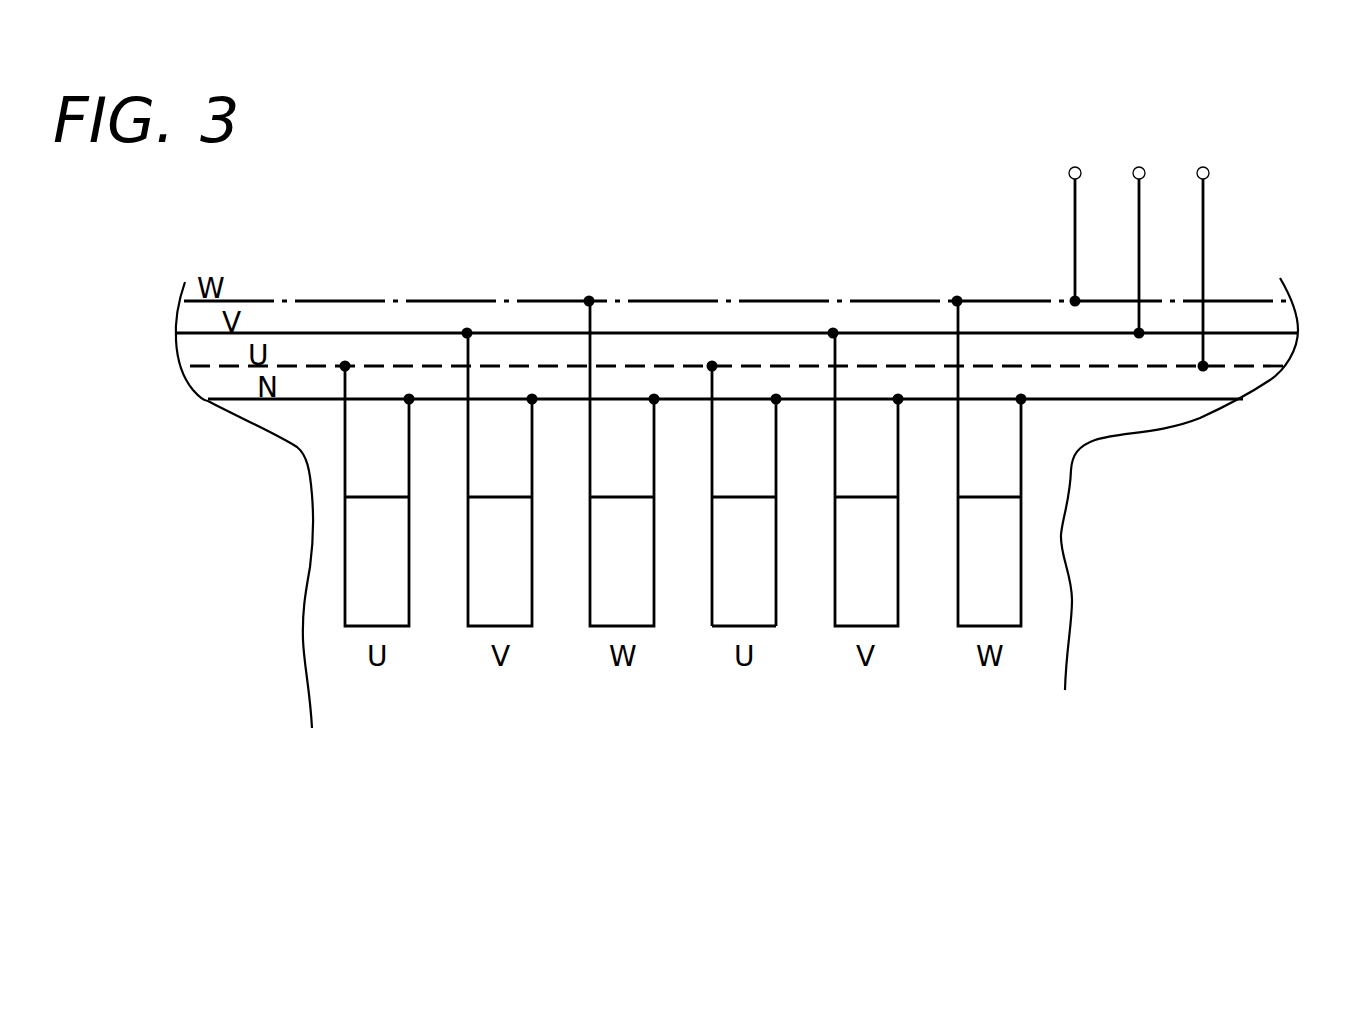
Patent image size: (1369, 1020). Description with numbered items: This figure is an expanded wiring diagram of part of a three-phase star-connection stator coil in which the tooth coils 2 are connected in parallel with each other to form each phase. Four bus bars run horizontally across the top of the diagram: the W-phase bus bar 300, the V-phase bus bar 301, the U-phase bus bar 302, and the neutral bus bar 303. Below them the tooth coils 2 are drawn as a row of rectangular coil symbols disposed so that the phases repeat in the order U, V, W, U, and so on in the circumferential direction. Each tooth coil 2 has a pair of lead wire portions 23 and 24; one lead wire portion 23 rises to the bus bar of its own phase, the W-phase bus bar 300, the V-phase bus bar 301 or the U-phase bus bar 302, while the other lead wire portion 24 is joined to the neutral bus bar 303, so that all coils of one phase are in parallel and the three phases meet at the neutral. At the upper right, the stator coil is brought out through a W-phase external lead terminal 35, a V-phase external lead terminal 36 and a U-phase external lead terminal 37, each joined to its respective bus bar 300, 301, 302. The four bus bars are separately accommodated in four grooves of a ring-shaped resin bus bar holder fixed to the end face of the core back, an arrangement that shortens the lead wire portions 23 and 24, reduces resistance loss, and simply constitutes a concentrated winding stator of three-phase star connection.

The tooth coil 2 is at (749, 570).
The lead wire portion 23 is at (712, 442).
The lead wire portion 24 is at (776, 442).
The W-phase external lead terminal 35 is at (1074, 218).
The V-phase external lead terminal 36 is at (1139, 218).
The U-phase external lead terminal 37 is at (1203, 230).
The W-phase bus bar 300 is at (1232, 300).
The V-phase bus bar 301 is at (1251, 332).
The U-phase bus bar 302 is at (1247, 366).
The neutral bus bar 303 is at (1220, 399).